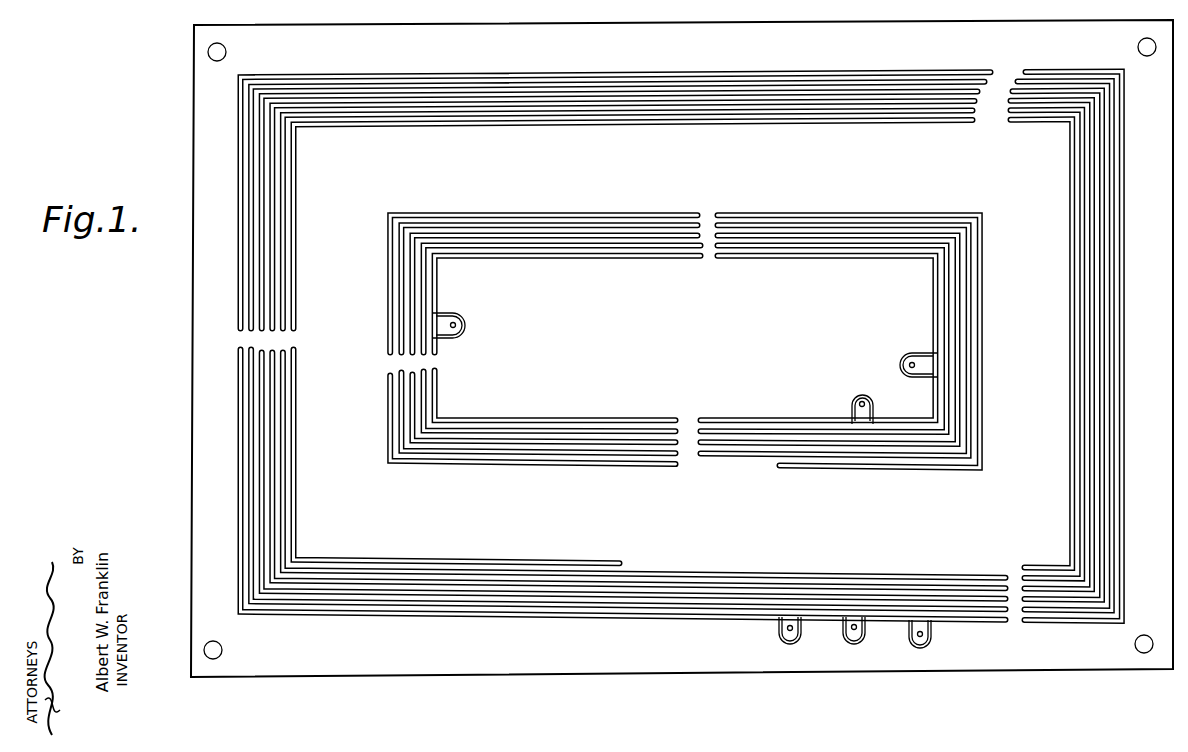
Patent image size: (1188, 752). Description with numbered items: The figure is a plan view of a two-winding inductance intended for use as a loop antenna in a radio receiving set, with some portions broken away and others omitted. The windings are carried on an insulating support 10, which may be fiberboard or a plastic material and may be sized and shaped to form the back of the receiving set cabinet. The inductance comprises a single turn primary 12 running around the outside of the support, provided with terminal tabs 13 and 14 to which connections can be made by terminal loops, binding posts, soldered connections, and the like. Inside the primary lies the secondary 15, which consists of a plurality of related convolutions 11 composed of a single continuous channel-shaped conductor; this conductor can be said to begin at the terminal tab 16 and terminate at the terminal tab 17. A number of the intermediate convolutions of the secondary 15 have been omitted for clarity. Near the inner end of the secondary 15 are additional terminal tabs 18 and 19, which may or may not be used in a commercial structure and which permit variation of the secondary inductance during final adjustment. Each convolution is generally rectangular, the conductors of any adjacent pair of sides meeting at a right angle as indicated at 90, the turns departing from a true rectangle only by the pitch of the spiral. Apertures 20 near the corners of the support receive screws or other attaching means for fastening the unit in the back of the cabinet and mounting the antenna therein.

The insulating support 10 is at (575, 660).
The convolutions 11 is at (388, 405).
The single turn primary 12 is at (693, 612).
The terminal tab 13 is at (926, 649).
The terminal tab 14 is at (797, 643).
The secondary 15 is at (531, 576).
The terminal tab 16 is at (859, 643).
The terminal tab 17 is at (853, 402).
The additional terminal tab 18 is at (466, 322).
The additional terminal tab 19 is at (905, 361).
The apertures 20 is at (219, 656).
The right angle 90 is at (300, 554).